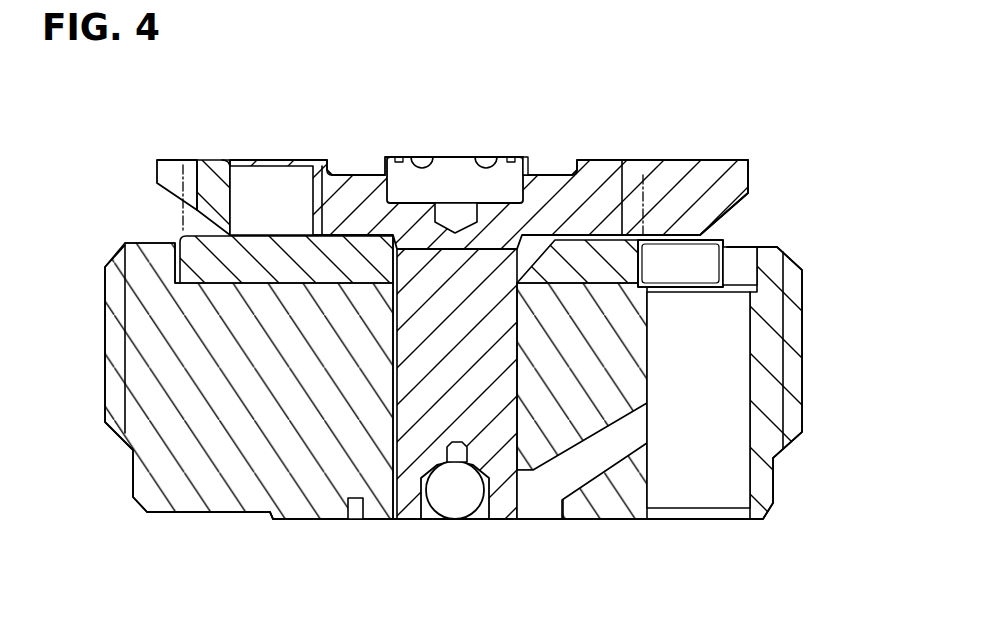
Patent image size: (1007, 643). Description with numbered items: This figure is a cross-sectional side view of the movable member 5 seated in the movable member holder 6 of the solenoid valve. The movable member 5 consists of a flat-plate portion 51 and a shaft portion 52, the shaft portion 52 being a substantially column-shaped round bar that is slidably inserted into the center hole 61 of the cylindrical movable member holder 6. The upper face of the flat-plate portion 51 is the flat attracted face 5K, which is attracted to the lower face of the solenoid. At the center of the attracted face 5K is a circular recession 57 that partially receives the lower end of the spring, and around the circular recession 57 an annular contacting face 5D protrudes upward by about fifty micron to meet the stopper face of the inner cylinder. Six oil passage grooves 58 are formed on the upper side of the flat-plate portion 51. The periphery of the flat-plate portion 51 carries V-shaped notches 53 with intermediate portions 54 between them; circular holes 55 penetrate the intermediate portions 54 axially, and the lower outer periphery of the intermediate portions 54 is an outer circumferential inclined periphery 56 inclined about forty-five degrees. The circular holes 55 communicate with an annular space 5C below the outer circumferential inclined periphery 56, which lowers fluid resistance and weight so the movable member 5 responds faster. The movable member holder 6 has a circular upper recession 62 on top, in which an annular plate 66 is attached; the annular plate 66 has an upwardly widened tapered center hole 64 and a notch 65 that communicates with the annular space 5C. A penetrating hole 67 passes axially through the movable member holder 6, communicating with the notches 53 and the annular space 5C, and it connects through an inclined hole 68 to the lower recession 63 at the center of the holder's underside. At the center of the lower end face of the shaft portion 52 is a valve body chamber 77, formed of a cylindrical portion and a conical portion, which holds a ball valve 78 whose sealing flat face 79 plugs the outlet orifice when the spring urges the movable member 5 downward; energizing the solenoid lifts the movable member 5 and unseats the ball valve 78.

The movable member 5 is at (712, 152).
The annular space 5C is at (730, 224).
The annular contacting face 5D is at (370, 153).
The attracted face 5K is at (210, 163).
The movable member holder 6 is at (776, 526).
The flat-plate portion 51 is at (603, 187).
The shaft portion 52 is at (317, 517).
The notch 53 is at (183, 168).
The intermediate portion 54 is at (213, 162).
The circular hole 55 is at (307, 193).
The outer circumferential inclined periphery 56 is at (747, 193).
The circular recession 57 is at (516, 160).
The oil passage groove 58 is at (350, 176).
The center hole 61 is at (405, 402).
The upper recession 62 is at (217, 285).
The lower recession 63 is at (353, 501).
The center hole 64 is at (392, 298).
The notch 65 is at (710, 267).
The annular plate 66 is at (181, 234).
The penetrating hole 67 is at (727, 380).
The inclined hole 68 is at (603, 450).
The valve body chamber 77 is at (481, 480).
The ball valve 78 is at (440, 500).
The sealing flat face 79 is at (457, 525).